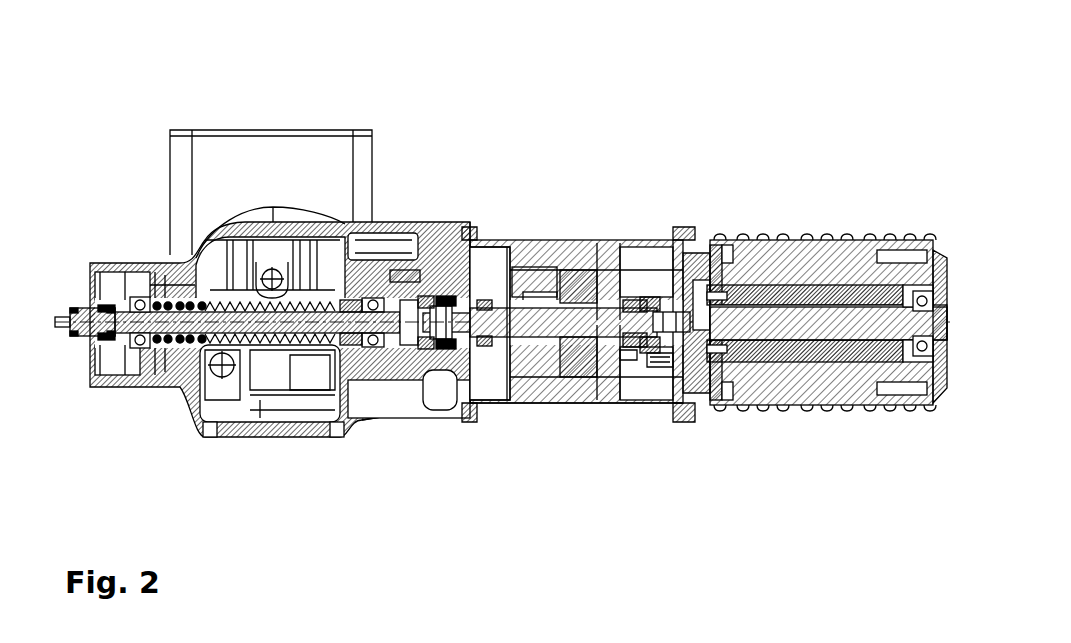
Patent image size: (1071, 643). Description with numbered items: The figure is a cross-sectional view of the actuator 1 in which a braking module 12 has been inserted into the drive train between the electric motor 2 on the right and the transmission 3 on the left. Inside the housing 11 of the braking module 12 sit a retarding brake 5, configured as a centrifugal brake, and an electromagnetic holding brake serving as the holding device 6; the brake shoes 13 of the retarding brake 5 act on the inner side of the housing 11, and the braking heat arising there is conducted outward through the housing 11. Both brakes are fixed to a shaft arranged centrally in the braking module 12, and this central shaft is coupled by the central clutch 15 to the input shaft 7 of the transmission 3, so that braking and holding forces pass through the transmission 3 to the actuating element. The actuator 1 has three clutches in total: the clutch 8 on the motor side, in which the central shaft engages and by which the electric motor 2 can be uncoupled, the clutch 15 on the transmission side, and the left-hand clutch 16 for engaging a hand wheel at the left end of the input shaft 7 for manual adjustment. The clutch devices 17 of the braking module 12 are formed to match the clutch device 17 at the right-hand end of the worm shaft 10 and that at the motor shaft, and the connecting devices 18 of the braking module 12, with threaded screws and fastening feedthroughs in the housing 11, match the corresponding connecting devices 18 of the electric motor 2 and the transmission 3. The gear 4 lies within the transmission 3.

The actuator 1 is at (838, 110).
The electric motor 2 is at (828, 238).
The transmission 3 is at (353, 428).
The gear 4 is at (268, 372).
The retarding brake 5 is at (593, 310).
The holding device 6 is at (518, 255).
The input shaft 7 is at (395, 335).
The clutch 8 is at (660, 310).
The worm shaft 10 is at (245, 362).
The housing 11 is at (610, 250).
The braking module 12 is at (477, 432).
The brake shoes 13 is at (577, 273).
The clutch 15 is at (442, 298).
The clutch 16 is at (114, 310).
The clutch device 17 is at (427, 290).
The connecting devices 18 is at (485, 432).